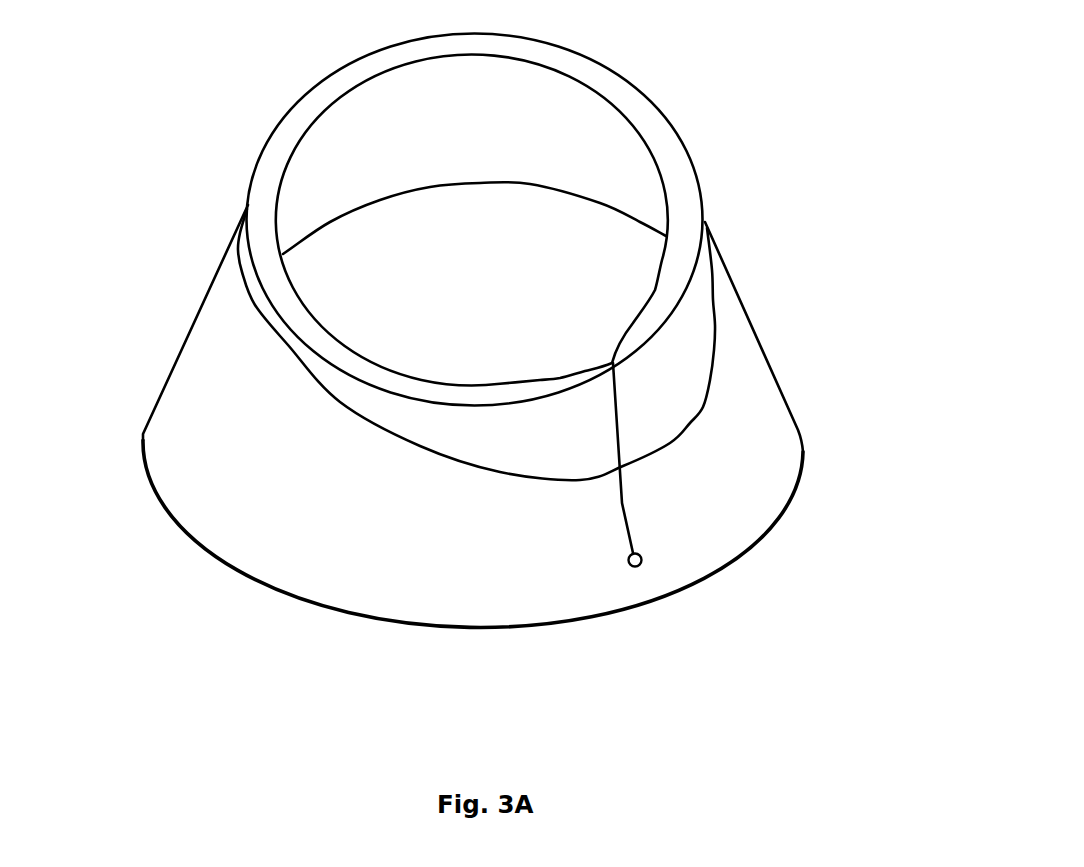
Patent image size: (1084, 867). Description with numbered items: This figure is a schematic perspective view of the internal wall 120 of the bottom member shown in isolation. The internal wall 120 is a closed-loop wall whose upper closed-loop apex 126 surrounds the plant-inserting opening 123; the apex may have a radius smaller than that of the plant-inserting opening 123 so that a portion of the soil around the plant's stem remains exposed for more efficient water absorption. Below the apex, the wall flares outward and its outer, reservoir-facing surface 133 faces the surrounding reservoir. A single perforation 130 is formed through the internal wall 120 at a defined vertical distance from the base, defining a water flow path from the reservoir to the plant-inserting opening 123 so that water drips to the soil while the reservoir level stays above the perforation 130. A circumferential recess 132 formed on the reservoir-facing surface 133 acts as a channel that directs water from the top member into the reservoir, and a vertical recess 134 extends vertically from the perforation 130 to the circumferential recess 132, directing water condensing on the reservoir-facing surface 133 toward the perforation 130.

The internal wall 120 is at (500, 358).
The plant-inserting opening 123 is at (400, 297).
The closed-loop apex 126 is at (263, 176).
The perforation 130 is at (631, 566).
The circumferential recess 132 is at (265, 318).
The reservoir-facing surface 133 is at (201, 489).
The vertical recess 134 is at (623, 505).